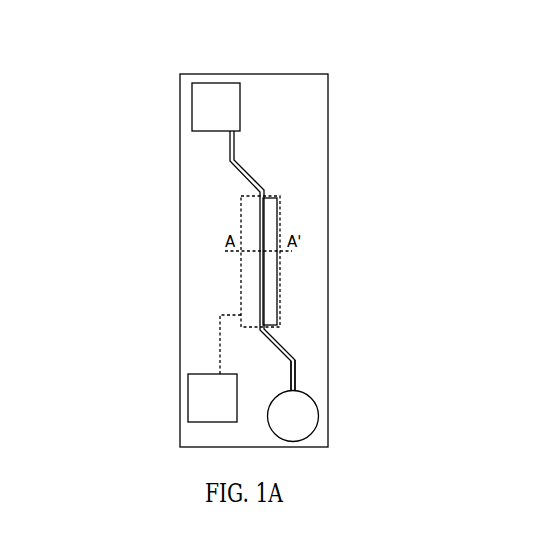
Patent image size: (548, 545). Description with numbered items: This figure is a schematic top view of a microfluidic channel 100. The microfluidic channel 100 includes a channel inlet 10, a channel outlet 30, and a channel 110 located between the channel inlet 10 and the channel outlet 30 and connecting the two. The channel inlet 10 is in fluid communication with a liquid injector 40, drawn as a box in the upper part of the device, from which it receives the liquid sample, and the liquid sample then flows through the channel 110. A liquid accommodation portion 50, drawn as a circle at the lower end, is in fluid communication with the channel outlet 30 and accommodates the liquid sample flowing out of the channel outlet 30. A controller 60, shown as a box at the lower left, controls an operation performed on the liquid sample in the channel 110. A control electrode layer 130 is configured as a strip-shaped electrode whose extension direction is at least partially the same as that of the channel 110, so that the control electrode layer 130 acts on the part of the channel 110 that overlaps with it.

The microfluidic channel 100 is at (130, 62).
The channel inlet 10 is at (230, 159).
The liquid injector 40 is at (192, 100).
The controller 60 is at (188, 400).
The channel 110 is at (265, 281).
The control electrode layer 130 is at (278, 212).
The channel outlet 30 is at (295, 370).
The liquid accommodation portion 50 is at (318, 408).